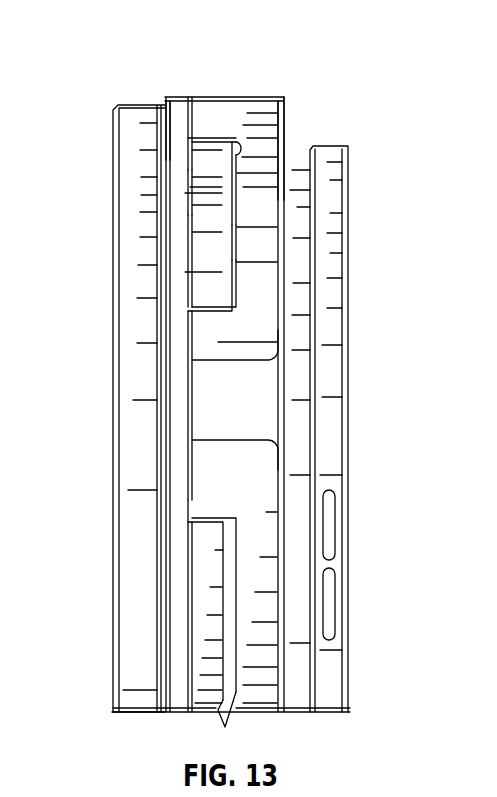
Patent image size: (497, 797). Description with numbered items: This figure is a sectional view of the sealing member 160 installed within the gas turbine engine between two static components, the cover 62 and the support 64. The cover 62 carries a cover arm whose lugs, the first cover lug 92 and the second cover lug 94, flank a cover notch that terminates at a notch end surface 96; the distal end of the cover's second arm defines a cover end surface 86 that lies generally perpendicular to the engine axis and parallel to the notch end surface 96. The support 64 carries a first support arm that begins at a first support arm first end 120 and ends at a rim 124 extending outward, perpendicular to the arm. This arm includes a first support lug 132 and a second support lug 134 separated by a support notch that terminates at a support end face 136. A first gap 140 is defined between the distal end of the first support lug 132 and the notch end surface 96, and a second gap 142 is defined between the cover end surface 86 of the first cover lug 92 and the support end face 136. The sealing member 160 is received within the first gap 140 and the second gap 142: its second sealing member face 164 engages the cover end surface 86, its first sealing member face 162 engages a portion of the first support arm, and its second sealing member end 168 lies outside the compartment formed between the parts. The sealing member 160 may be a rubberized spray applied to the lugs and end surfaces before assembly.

The cover 62 is at (88, 127).
The support 64 is at (311, 91).
The cover end surface 86 is at (192, 197).
The first cover lug 92 is at (190, 230).
The second cover lug 94 is at (185, 607).
The notch end surface 96 is at (183, 402).
The first support arm first end 120 is at (190, 468).
The rim 124 is at (283, 93).
The first support lug 132 is at (258, 323).
The second support lug 134 is at (228, 105).
The support end face 136 is at (233, 250).
The first gap 140 is at (176, 123).
The second gap 142 is at (246, 273).
The sealing member 160 is at (191, 87).
The first sealing member face 162 is at (240, 152).
The second sealing member face 164 is at (222, 160).
The second sealing member end 168 is at (230, 215).